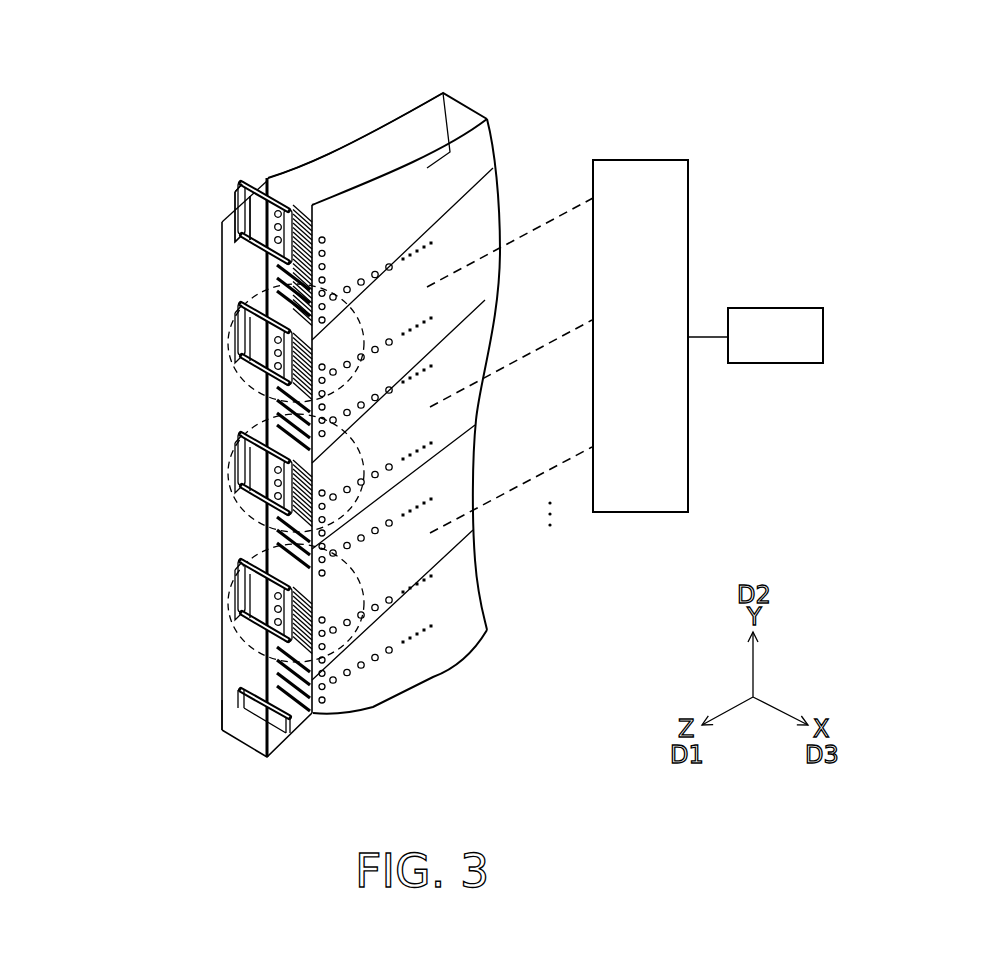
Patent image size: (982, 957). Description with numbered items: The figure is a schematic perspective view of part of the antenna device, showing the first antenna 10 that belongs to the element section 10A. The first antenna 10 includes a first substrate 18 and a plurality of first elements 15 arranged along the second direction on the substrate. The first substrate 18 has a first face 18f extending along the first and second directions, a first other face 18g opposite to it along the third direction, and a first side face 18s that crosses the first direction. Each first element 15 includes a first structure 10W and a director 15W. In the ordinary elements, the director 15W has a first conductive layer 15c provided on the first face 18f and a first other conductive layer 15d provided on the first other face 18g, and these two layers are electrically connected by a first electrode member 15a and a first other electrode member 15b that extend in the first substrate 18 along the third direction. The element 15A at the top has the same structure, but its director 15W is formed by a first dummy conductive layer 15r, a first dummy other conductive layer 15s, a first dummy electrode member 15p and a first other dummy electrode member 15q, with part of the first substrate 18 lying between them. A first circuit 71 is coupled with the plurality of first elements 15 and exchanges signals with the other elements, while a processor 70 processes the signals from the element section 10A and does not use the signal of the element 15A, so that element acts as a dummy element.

The first antenna 10 is at (532, 75).
The element section 10A is at (615, 63).
The first structure 10W is at (397, 250).
The first elements 15 is at (225, 315).
The element 15A is at (303, 190).
The director 15W is at (173, 416).
The first dummy electrode member 15p is at (262, 177).
The first dummy other conductive layer 15s is at (240, 215).
The first dummy conductive layer 15r is at (290, 212).
The first other dummy electrode member 15q is at (290, 238).
The first electrode member 15a is at (285, 318).
The first other conductive layer 15d is at (243, 340).
The first conductive layer 15c is at (290, 378).
The first other electrode member 15b is at (277, 390).
The first substrate 18 is at (212, 497).
The first side face 18s is at (237, 663).
The first other face 18g is at (222, 682).
The first face 18f is at (299, 708).
The first circuit 71 is at (665, 158).
The processor 70 is at (778, 308).